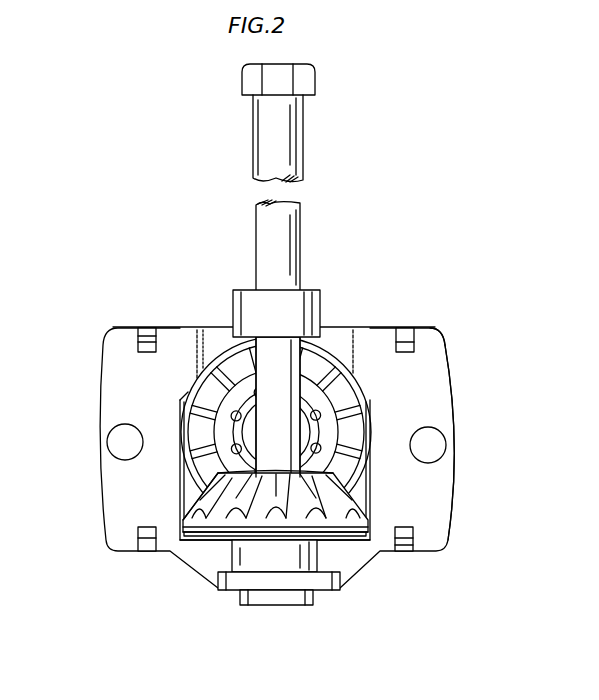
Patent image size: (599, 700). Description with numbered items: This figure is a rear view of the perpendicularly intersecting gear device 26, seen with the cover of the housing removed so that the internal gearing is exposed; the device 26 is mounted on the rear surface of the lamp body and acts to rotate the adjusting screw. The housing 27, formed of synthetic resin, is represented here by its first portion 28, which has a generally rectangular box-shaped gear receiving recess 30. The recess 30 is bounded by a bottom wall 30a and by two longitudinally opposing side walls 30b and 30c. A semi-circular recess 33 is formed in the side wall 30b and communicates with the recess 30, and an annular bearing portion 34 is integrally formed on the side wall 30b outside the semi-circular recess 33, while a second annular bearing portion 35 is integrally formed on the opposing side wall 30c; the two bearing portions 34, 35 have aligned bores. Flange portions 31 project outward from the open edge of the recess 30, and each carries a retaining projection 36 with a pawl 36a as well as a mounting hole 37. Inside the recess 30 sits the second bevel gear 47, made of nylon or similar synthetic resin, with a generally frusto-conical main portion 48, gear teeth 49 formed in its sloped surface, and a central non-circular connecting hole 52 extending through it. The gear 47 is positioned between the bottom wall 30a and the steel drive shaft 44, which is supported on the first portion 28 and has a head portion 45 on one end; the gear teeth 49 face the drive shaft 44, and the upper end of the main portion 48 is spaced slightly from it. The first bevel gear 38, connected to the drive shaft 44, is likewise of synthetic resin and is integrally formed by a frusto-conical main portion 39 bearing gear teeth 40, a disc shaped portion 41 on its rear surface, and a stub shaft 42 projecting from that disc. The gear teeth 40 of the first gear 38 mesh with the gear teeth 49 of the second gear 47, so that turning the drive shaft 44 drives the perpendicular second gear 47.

The perpendicularly intersecting gear device 26 is at (447, 228).
The housing 27 is at (445, 342).
The first portion 28 is at (447, 368).
The gear receiving recess 30 is at (240, 444).
The bottom wall 30a is at (188, 490).
The side wall 30b is at (365, 545).
The side wall 30c is at (330, 342).
The flange portions 31 is at (107, 385).
The semi-circular recess 33 is at (312, 588).
The bearing portion 34 is at (235, 586).
The bearing portion 35 is at (248, 297).
The retaining projections 36 is at (147, 330).
The pawls 36a is at (143, 353).
The mounting holes 37 is at (118, 440).
The first bevel gear 38 is at (190, 545).
The main portion 39 is at (265, 522).
The gear teeth 40 is at (283, 486).
The disc shaped portion 41 is at (305, 540).
The stub shaft 42 is at (237, 552).
The drive shaft 44 is at (300, 222).
The head portion 45 is at (312, 80).
The second bevel gear 47 is at (279, 406).
The main portion 48 is at (193, 422).
The gear teeth 49 is at (197, 400).
The non-circular connecting hole 52 is at (348, 447).